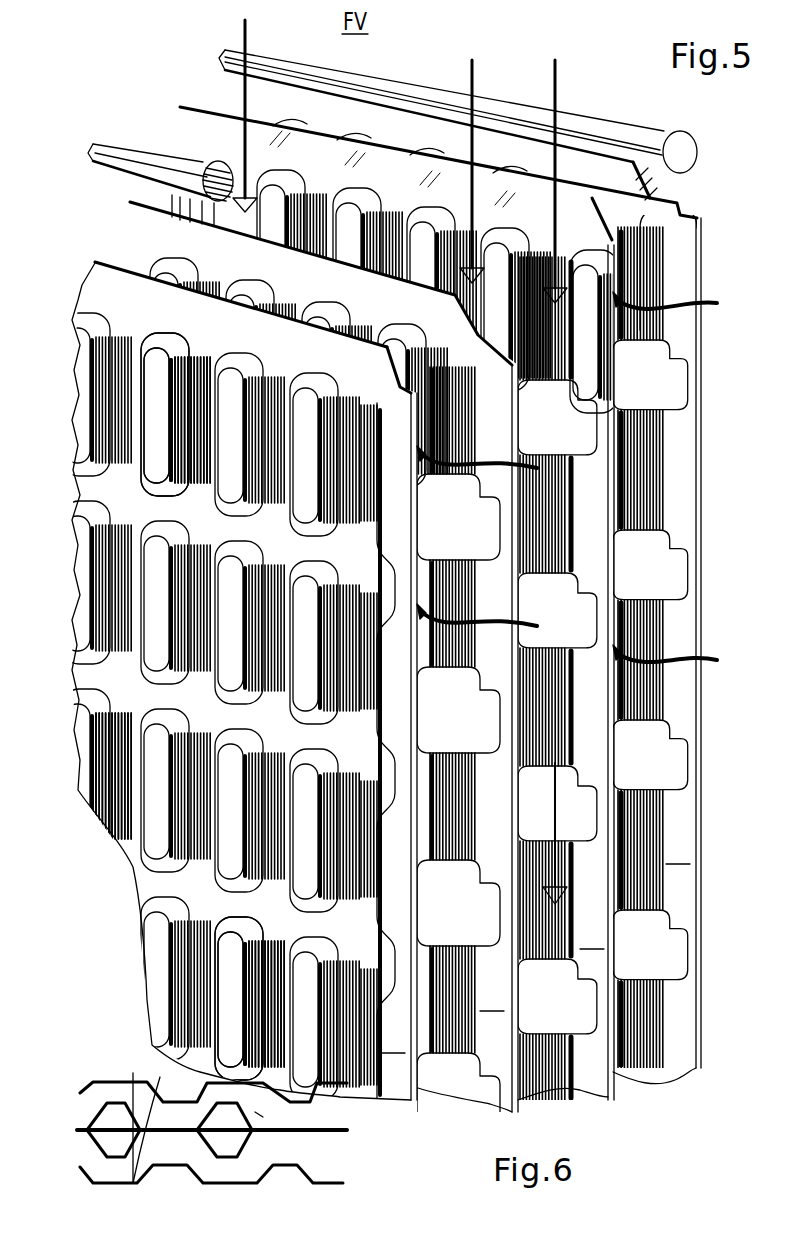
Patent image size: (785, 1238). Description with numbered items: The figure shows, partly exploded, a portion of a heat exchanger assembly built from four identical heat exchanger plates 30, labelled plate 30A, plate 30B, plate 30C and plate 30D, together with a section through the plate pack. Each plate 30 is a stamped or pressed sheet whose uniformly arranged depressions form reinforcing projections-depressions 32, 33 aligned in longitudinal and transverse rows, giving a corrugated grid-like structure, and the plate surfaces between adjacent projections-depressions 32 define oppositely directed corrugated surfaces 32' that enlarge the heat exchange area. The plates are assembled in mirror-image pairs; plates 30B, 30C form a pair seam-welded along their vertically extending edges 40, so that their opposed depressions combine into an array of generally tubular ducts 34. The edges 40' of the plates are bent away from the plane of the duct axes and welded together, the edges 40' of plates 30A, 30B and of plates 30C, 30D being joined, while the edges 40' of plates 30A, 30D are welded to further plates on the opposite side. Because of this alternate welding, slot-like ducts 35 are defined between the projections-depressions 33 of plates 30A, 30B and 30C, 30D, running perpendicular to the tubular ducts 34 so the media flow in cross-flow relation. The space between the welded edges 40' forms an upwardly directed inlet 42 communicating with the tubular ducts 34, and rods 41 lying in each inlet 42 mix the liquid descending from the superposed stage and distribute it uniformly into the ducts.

In FIG. 5, the heat exchanger plate 30 is at (535, 947).
In FIG. 6, the heat exchanger plate 30 is at (133, 1083).
In FIG. 5, the heat exchanger plate 30A is at (414, 1110).
In FIG. 6, the heat exchanger plate 30A is at (345, 1183).
In FIG. 5, the heat exchanger plate 30B is at (516, 1112).
In FIG. 6, the heat exchanger plate 30B is at (310, 1140).
In FIG. 5, the heat exchanger plate 30C is at (617, 1072).
In FIG. 6, the heat exchanger plate 30C is at (310, 1138).
In FIG. 5, the heat exchanger plate 30D is at (702, 1062).
In FIG. 6, the heat exchanger plate 30D is at (93, 1082).
In FIG. 5, the projections-depressions 32 is at (361, 694).
In FIG. 5, the corrugated surfaces 32' is at (229, 998).
In FIG. 5, the projections-depressions 33 is at (135, 866).
In FIG. 5, the tubular ducts 34 is at (402, 452).
In FIG. 6, the tubular ducts 34 is at (126, 1142).
In FIG. 6, the slot-like ducts 35 is at (262, 1117).
In FIG. 5, the edges 40 is at (586, 559).
In FIG. 6, the edges 40 is at (229, 1131).
In FIG. 5, the edges 40' is at (396, 194).
In FIG. 5, the rods 41 is at (614, 122).
In FIG. 5, the inlet 42 is at (150, 191).